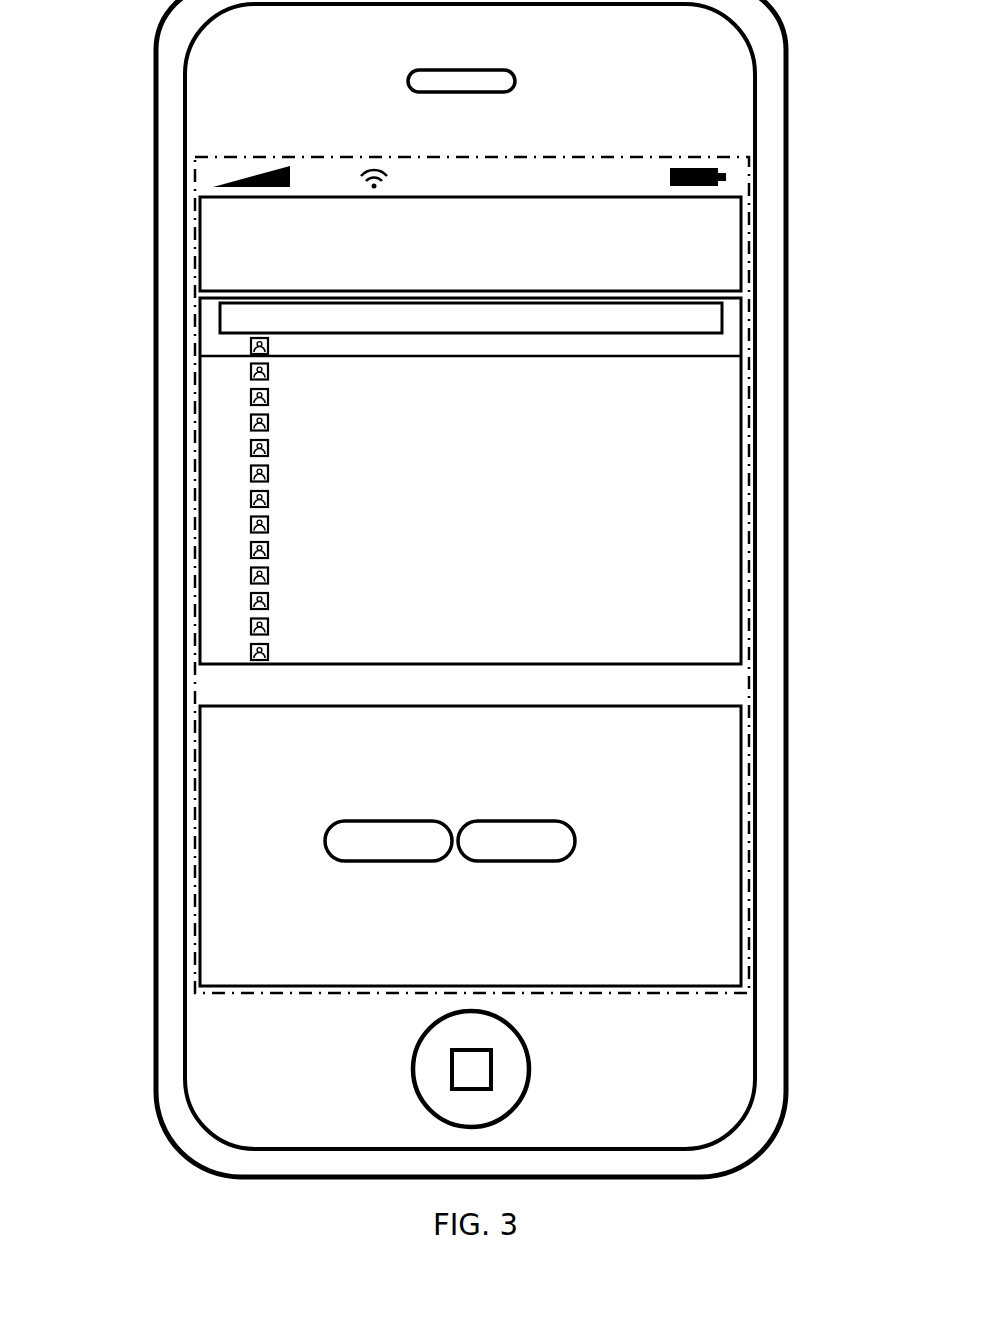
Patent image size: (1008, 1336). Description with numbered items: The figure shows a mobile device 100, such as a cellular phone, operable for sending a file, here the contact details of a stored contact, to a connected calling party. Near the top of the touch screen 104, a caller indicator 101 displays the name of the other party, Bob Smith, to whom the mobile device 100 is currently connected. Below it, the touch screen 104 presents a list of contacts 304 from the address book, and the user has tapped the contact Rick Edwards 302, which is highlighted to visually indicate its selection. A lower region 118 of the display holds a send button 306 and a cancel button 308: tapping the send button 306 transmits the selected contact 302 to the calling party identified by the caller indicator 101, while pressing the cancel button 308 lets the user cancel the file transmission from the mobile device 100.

The mobile device 100 is at (786, 118).
The caller indicator 101 is at (743, 242).
The touch screen 104 is at (456, 473).
The list of contacts 304 is at (722, 317).
The selected contact 302 is at (250, 346).
The message/action panel 118 is at (722, 804).
The send button 306 is at (325, 841).
The cancel button 308 is at (575, 841).